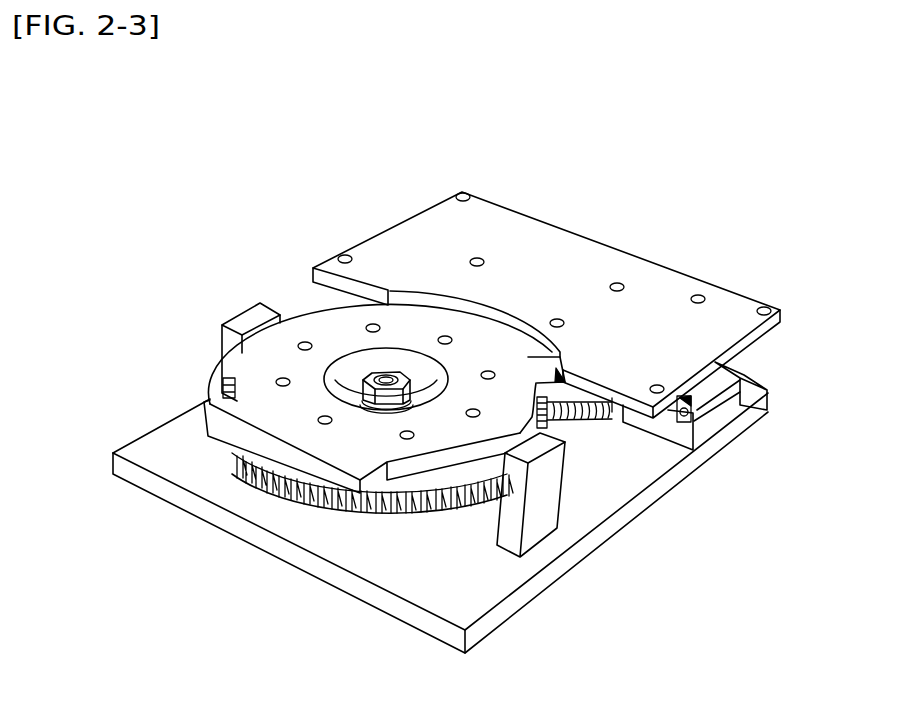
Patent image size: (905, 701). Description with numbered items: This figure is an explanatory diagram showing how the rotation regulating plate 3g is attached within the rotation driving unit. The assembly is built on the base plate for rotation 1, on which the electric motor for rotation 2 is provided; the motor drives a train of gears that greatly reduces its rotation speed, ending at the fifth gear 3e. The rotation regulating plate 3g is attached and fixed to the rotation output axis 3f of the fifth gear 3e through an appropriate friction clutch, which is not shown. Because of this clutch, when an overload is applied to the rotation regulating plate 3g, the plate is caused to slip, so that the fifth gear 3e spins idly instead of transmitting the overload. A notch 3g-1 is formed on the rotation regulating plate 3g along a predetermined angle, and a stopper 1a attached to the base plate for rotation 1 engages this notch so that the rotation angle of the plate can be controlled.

The base plate for rotation 1 is at (677, 477).
The stopper 1a is at (243, 323).
The electric motor for rotation 2 is at (710, 383).
The fifth gear 3e is at (418, 512).
The rotation output axis 3f is at (385, 384).
The rotation regulating plate 3g is at (282, 423).
The notch 3g-1 is at (327, 325).